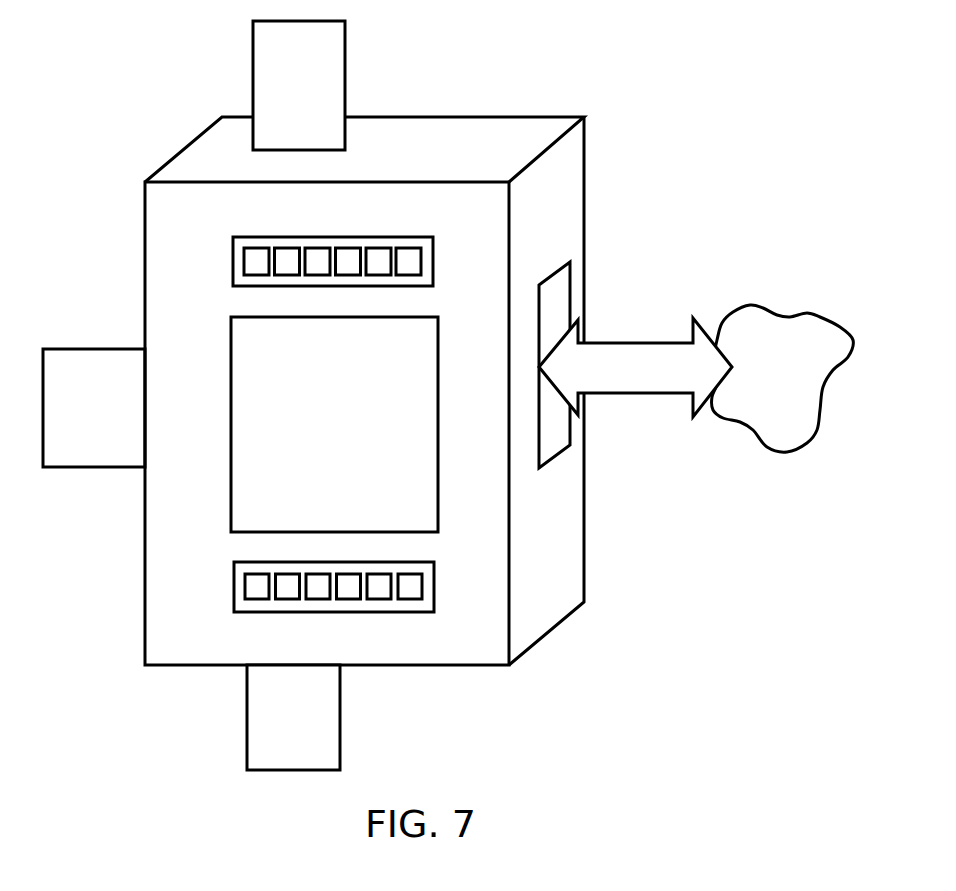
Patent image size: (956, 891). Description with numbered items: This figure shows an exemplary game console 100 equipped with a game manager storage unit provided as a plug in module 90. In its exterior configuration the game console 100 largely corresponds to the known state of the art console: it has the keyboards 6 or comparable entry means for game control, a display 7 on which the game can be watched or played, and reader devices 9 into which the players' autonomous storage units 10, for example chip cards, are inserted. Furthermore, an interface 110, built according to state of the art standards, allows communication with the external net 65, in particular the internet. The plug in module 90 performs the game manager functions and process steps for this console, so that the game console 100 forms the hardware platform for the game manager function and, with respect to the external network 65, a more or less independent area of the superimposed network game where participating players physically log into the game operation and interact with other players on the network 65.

The game console 100 is at (358, 389).
The reader device 9 is at (318, 667).
The autonomous storage unit 10 is at (338, 38).
The keyboards 6 is at (235, 242).
The display 7 is at (237, 490).
The plug in module 90 is at (65, 353).
The interface 110 is at (560, 283).
The external net 65 is at (795, 323).